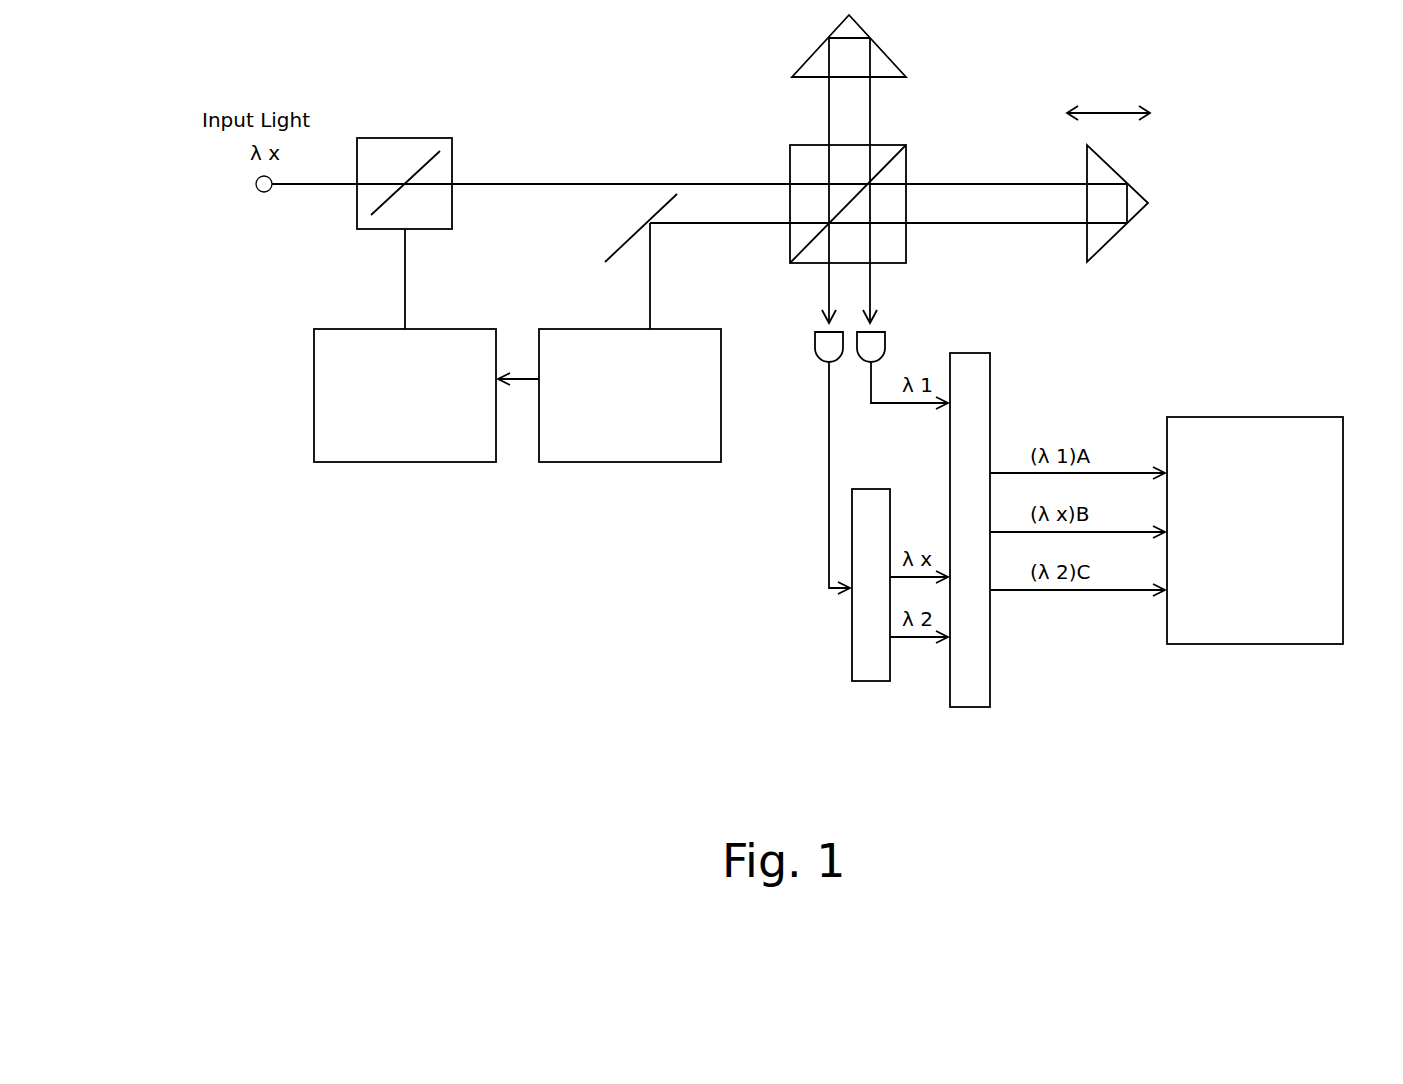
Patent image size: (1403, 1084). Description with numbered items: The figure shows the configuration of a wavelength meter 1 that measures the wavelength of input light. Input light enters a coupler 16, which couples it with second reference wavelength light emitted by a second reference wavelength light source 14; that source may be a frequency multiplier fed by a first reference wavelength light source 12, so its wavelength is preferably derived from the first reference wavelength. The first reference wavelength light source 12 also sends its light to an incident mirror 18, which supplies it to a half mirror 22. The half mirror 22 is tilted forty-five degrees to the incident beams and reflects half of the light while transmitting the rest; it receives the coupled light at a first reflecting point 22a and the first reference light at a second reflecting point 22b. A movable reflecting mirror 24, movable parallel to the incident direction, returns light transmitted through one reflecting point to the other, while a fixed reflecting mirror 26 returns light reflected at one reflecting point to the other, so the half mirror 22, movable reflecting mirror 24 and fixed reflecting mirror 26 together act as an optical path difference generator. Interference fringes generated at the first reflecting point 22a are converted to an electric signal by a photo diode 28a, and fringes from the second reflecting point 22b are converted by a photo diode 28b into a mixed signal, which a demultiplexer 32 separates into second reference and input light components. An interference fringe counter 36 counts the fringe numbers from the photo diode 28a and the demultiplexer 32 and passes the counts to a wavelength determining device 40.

The wavelength meter 1 is at (1265, 85).
The first reference wavelength light source 12 is at (543, 329).
The second reference wavelength light source 14 is at (440, 329).
The coupler 16 is at (452, 160).
The incident mirror 18 is at (653, 215).
The half mirror 22 is at (880, 167).
The first reflecting point 22a is at (870, 184).
The second reflecting point 22b is at (829, 223).
The movable reflecting mirror 24 is at (1108, 166).
The fixed reflecting mirror 26 is at (866, 32).
The photo diode 28a is at (885, 345).
The photo diode 28b is at (815, 350).
The demultiplexer 32 is at (872, 681).
The interference fringe counter 36 is at (968, 707).
The wavelength determining device 40 is at (1222, 417).